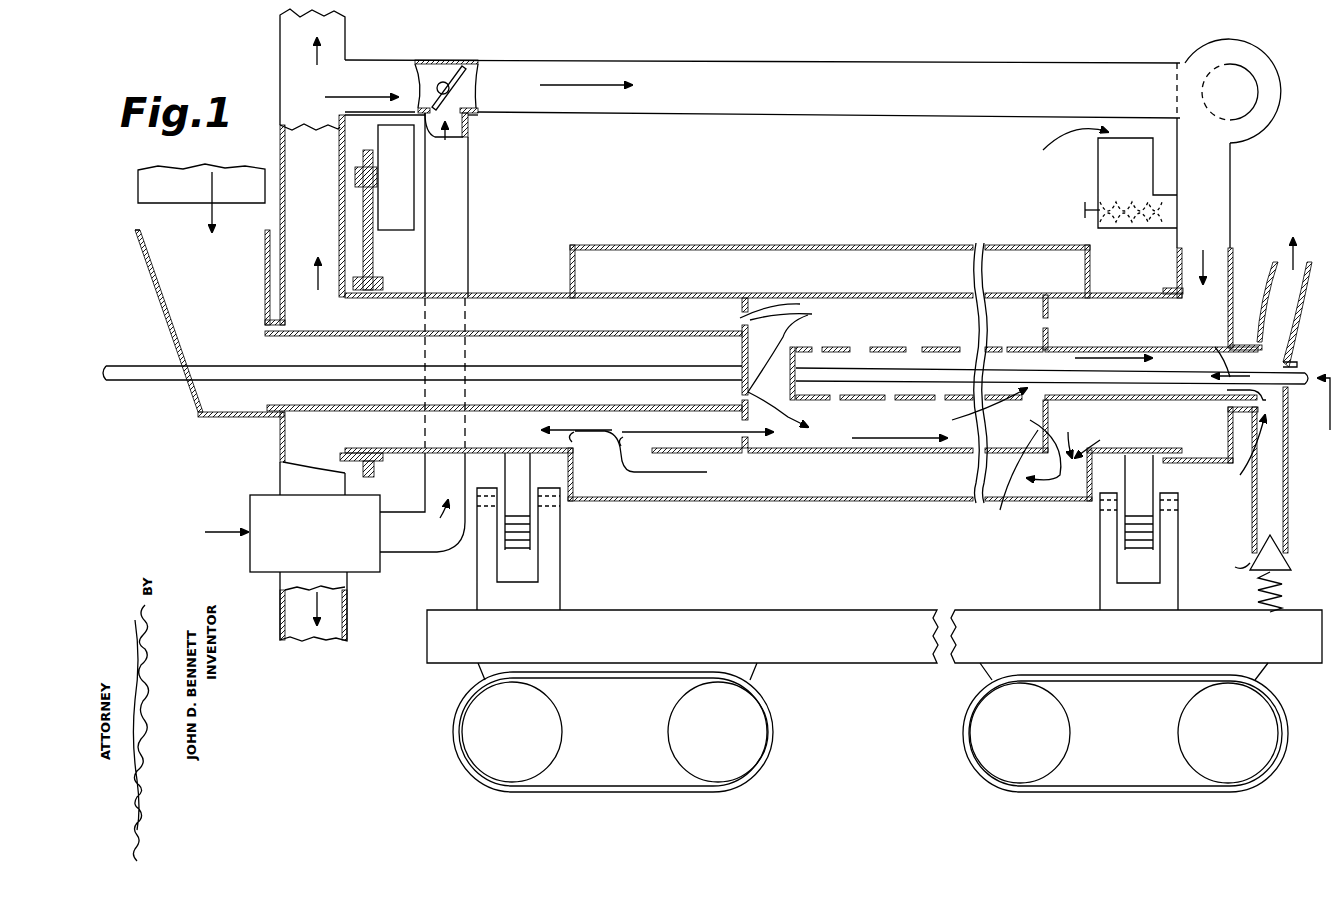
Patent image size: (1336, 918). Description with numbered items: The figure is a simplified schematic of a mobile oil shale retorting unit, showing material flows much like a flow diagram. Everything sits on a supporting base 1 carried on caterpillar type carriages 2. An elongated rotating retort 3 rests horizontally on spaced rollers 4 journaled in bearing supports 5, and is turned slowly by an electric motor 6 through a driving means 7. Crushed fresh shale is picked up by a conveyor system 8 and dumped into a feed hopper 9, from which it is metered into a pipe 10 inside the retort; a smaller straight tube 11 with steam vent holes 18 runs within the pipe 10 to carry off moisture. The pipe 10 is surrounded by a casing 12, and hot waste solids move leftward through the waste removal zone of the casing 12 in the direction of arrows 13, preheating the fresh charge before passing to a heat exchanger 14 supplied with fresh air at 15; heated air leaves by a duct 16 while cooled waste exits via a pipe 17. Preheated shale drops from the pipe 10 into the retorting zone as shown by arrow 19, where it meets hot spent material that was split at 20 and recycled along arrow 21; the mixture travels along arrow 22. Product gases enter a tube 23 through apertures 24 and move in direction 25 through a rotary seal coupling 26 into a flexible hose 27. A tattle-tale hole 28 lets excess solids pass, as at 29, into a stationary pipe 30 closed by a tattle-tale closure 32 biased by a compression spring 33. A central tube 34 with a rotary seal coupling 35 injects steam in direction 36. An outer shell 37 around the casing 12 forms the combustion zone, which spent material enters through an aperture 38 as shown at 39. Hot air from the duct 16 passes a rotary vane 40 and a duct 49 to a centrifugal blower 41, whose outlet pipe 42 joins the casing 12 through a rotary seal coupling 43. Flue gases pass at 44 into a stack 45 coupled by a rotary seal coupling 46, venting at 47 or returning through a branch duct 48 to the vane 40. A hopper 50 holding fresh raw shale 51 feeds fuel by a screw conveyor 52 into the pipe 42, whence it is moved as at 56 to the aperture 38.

The supporting base 1 is at (750, 611).
The caterpillar type carriages 2 is at (766, 722).
The retort 3 is at (752, 242).
The rollers 4 is at (525, 474).
The bearing supports 5 is at (544, 559).
The electric motor 6 is at (402, 181).
The driving means 7 is at (373, 223).
The conveyor system 8 is at (148, 186).
The feed hopper 9 is at (165, 318).
The pipe 10 is at (681, 330).
The straight tube 11 is at (699, 368).
The casing 12 is at (548, 290).
The arrows 13 is at (342, 448).
The heat exchanger 14 is at (252, 558).
The fresh air supply 15 is at (225, 534).
The duct 16 is at (458, 550).
The pipe 17 is at (332, 610).
The steam vent holes 18 is at (498, 374).
The arrow 19 is at (778, 412).
The splitting point 20 is at (632, 456).
The arrow 21 is at (672, 431).
The arrow 22 is at (928, 448).
The tube 23 is at (1030, 350).
The apertures 24 is at (815, 348).
The arrow 25 is at (1137, 347).
The rotary seal coupling 26 is at (1232, 348).
The flexible hose 27 is at (1293, 310).
The tattle-tale hole 28 is at (989, 410).
The arrow 29 is at (1242, 474).
The stationary pipe 30 is at (1286, 432).
The tattle-tale closure 32 is at (1288, 563).
The compression spring 33 is at (1284, 596).
The central tube 34 is at (1068, 357).
The rotary seal coupling 35 is at (1288, 398).
The direction of steam flow 36 is at (1216, 347).
The outer shell 37 is at (873, 244).
The aperture 38 is at (1070, 435).
The arrow 39 is at (1014, 480).
The rotary vane 40 is at (450, 62).
The centrifugal blower 41 is at (1208, 46).
The pipe 42 is at (1232, 212).
The rotary seal coupling 43 is at (1173, 288).
The flue gas flow 44 is at (382, 322).
The stack 45 is at (280, 120).
The rotary seal coupling 46 is at (366, 281).
The vent 47 is at (315, 52).
The branch duct 48 is at (384, 62).
The duct 49 is at (612, 124).
The hopper 50 is at (1061, 178).
The fresh raw shale 51 is at (1013, 222).
The screw conveyor 52 is at (1098, 220).
The feed path 56 is at (1097, 417).